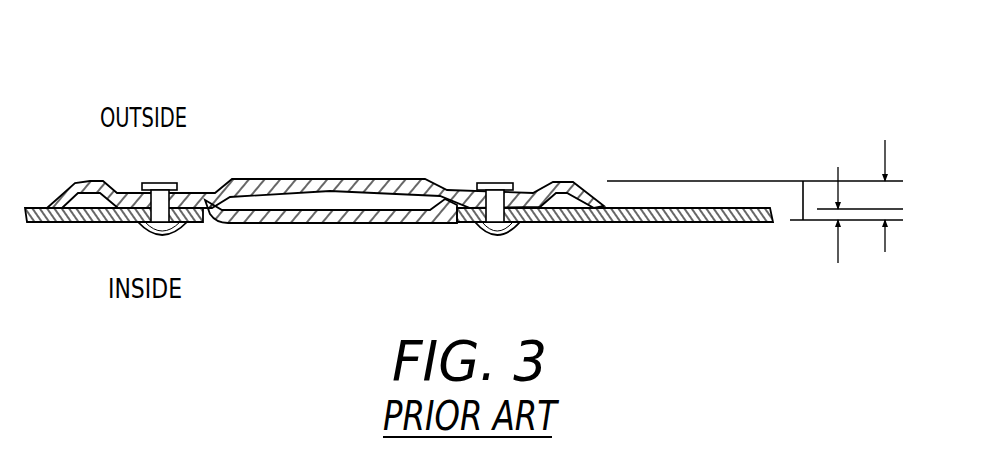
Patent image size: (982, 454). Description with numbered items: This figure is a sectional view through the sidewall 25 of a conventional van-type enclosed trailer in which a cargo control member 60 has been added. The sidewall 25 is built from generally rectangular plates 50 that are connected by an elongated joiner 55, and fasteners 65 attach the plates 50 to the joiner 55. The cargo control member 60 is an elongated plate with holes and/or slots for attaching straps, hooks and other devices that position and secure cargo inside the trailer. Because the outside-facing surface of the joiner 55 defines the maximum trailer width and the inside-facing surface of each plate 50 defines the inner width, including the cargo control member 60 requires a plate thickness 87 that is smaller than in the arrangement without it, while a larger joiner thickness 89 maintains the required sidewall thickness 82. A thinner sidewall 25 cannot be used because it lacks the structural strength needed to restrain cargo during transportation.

The sidewall 25 is at (563, 128).
The plate 50 is at (60, 224).
The joiner 55 is at (412, 186).
The cargo control member 60 is at (293, 225).
The fastener 65 is at (166, 183).
The sidewall thickness 82 is at (802, 200).
The plate thickness 87 is at (860, 233).
The joiner thickness 89 is at (889, 181).